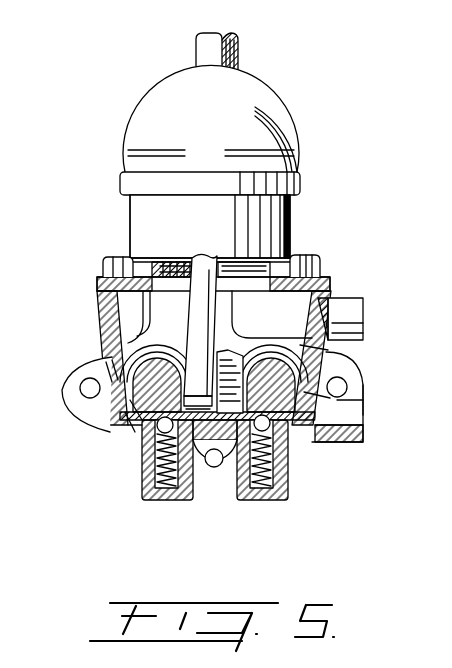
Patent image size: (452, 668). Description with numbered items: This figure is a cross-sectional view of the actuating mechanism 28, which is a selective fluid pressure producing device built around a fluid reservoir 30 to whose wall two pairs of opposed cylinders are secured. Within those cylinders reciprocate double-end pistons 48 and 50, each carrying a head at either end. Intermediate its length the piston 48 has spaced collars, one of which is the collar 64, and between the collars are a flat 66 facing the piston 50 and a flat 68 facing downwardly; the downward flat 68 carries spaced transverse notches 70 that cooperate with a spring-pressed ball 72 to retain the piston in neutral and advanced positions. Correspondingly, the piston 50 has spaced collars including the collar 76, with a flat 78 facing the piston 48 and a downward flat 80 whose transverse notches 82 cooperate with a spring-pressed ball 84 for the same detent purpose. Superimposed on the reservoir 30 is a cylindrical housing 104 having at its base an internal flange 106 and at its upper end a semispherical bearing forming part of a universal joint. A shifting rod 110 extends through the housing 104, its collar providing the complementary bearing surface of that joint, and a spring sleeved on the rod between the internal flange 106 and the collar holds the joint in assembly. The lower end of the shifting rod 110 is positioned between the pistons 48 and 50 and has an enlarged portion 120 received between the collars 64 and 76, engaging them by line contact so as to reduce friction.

The shifting rod 110 is at (207, 62).
The enlarged portion 120 is at (300, 148).
The cylindrical housing 104 is at (292, 228).
The actuating mechanism 28 is at (128, 224).
The internal flange 106 is at (100, 283).
The fluid reservoir 30 is at (330, 297).
The flat 78 is at (178, 368).
The collar 76 is at (165, 356).
The double-end piston 50 is at (140, 382).
The collar 64 is at (318, 364).
The double-end piston 48 is at (298, 376).
The flat 66 is at (363, 402).
The transverse notches 70 is at (340, 420).
The transverse notches 82 is at (123, 438).
The flat 80 is at (138, 444).
The spring-pressed ball 84 is at (165, 488).
The spring-pressed ball 72 is at (262, 490).
The flat 68 is at (296, 444).